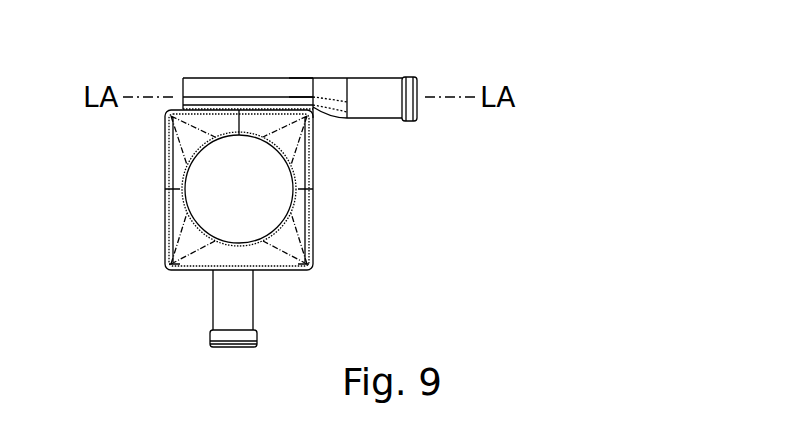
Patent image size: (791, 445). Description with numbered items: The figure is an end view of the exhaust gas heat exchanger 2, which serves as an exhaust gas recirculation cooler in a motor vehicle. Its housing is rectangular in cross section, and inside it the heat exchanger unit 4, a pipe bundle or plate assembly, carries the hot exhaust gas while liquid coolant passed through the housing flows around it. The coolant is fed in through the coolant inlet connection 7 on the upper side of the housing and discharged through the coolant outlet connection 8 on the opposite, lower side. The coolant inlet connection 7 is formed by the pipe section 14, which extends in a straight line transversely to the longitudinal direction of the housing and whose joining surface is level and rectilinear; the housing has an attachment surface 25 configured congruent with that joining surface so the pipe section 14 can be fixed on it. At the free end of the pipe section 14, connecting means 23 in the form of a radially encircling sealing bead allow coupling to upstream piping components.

The exhaust gas heat exchanger 2 is at (110, 211).
The heat exchanger unit 4 is at (203, 205).
The coolant inlet connection 7 is at (217, 70).
The coolant outlet connection 8 is at (200, 305).
The pipe section 14 is at (290, 77).
The connecting means 23 is at (408, 77).
The attachment surface 25 is at (278, 113).